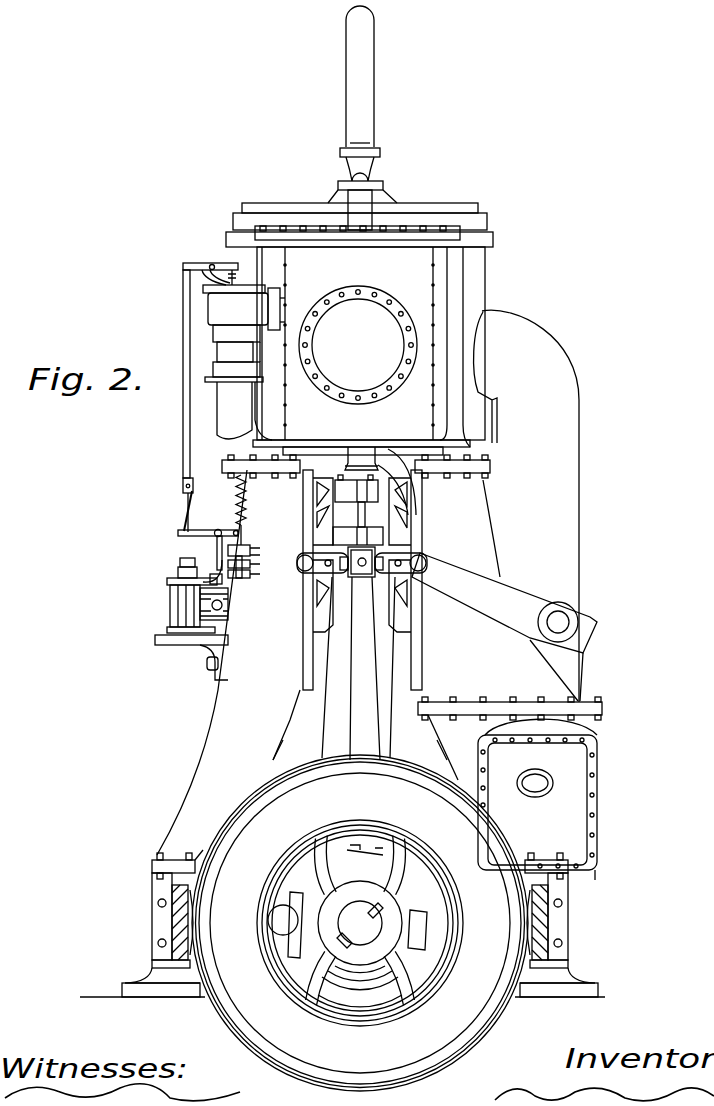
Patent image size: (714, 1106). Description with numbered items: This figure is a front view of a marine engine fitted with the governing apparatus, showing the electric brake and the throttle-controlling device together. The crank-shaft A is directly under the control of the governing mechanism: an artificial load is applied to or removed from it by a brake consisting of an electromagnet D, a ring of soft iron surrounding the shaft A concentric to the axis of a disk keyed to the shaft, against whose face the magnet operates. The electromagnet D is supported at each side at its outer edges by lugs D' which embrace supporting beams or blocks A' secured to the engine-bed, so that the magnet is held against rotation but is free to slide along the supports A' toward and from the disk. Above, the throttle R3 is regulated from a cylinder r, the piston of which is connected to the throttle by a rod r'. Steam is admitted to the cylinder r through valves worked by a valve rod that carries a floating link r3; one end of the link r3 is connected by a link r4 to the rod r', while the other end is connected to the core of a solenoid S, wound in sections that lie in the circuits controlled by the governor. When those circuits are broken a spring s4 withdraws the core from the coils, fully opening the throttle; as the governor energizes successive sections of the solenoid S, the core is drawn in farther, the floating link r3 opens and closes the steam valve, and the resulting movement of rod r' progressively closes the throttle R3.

The throttle R3 is at (234, 351).
The rod r' is at (176, 401).
The link r4 is at (185, 521).
The floating link r3 is at (207, 530).
The spring s4 is at (249, 496).
The solenoid S is at (247, 556).
The cylinder r is at (187, 619).
The electromagnet D is at (360, 923).
The crank-shaft A is at (347, 921).
The supporting beams or blocks A' is at (356, 910).
The lugs D' is at (342, 921).